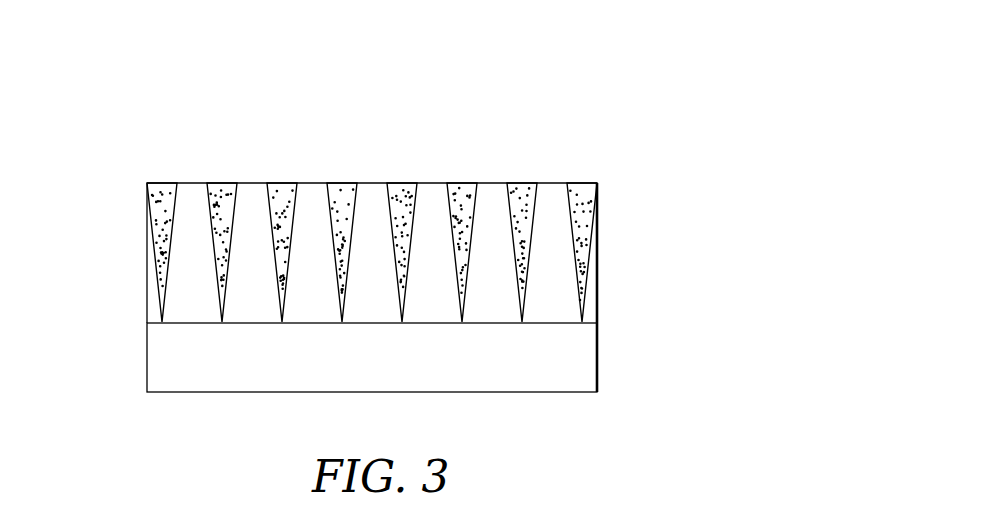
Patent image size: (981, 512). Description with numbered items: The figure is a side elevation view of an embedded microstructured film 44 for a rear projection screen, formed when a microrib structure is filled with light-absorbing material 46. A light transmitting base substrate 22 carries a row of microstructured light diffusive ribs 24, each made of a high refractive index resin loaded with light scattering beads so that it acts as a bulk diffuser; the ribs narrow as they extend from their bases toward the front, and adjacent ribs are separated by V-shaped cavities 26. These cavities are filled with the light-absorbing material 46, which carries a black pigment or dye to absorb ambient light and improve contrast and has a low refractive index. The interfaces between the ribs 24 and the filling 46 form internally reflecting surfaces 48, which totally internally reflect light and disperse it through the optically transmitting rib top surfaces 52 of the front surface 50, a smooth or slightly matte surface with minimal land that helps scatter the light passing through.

The light transmitting base substrate 22 is at (147, 362).
The light diffusive ribs 24 is at (414, 249).
The V-shaped cavities 26 is at (372, 214).
The embedded microstructured film 44 is at (370, 207).
The light-absorbing material 46 is at (600, 240).
The internally reflecting surfaces 48 is at (329, 214).
The front surface 50 is at (489, 183).
The rib top surfaces 52 is at (429, 183).